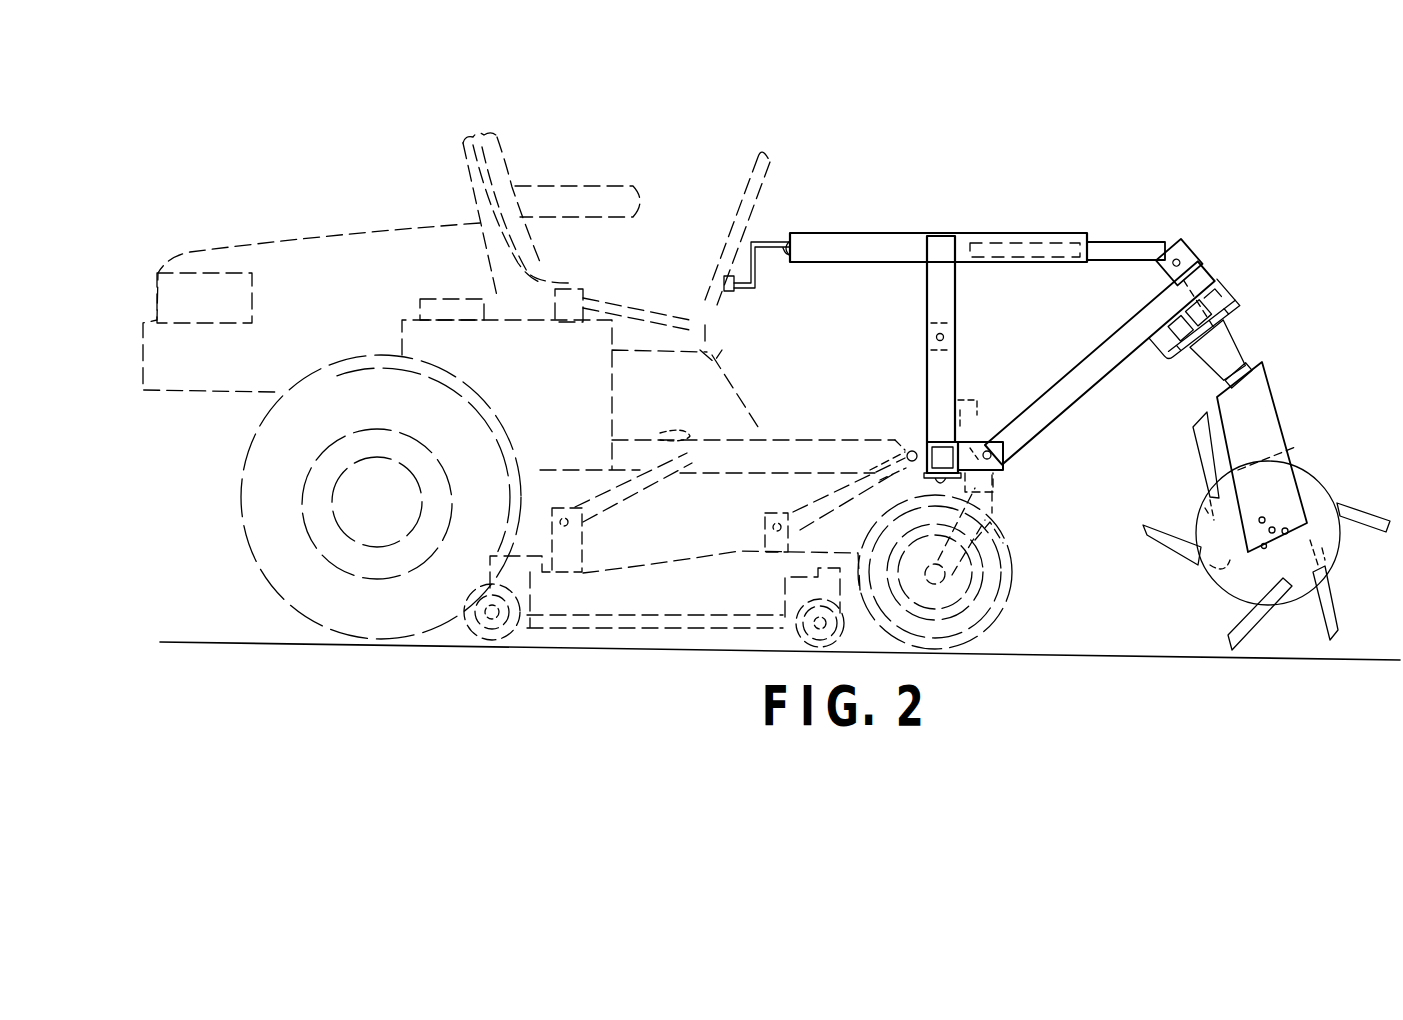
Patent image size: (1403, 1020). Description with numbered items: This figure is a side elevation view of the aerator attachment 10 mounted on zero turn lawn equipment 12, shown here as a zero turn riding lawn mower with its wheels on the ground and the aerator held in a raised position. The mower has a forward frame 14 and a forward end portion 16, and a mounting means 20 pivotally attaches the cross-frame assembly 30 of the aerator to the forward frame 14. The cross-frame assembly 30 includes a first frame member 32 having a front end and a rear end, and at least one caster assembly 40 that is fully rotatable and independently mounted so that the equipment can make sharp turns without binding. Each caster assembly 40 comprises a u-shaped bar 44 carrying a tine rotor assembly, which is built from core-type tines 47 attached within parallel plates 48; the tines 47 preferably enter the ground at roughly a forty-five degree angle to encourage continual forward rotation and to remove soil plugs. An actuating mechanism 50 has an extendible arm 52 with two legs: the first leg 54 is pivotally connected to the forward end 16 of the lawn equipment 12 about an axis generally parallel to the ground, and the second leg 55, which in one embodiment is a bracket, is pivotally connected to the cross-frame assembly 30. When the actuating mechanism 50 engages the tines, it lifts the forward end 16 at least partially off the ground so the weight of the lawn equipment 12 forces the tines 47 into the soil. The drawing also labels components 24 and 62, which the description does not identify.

The aerator attachment 10 is at (1058, 146).
The zero turn lawn equipment 12 is at (560, 172).
The forward frame 14 is at (968, 426).
The forward end portion 16 is at (921, 457).
The mounting means 20 is at (942, 439).
The mounting block 24 is at (1006, 456).
The cross-frame assembly 30 is at (1099, 228).
The first frame member 32 is at (1097, 349).
The caster assembly 40 is at (1320, 446).
The u-shaped bar 44 is at (1277, 386).
The core-type tines 47 is at (1198, 430).
The parallel plates 48 is at (1305, 472).
The actuating mechanism 50 is at (972, 222).
The extendible arm 52 is at (1128, 254).
The first leg 54 is at (937, 298).
The second leg 55 is at (1200, 252).
The hydraulic hose fitting 62 is at (718, 263).